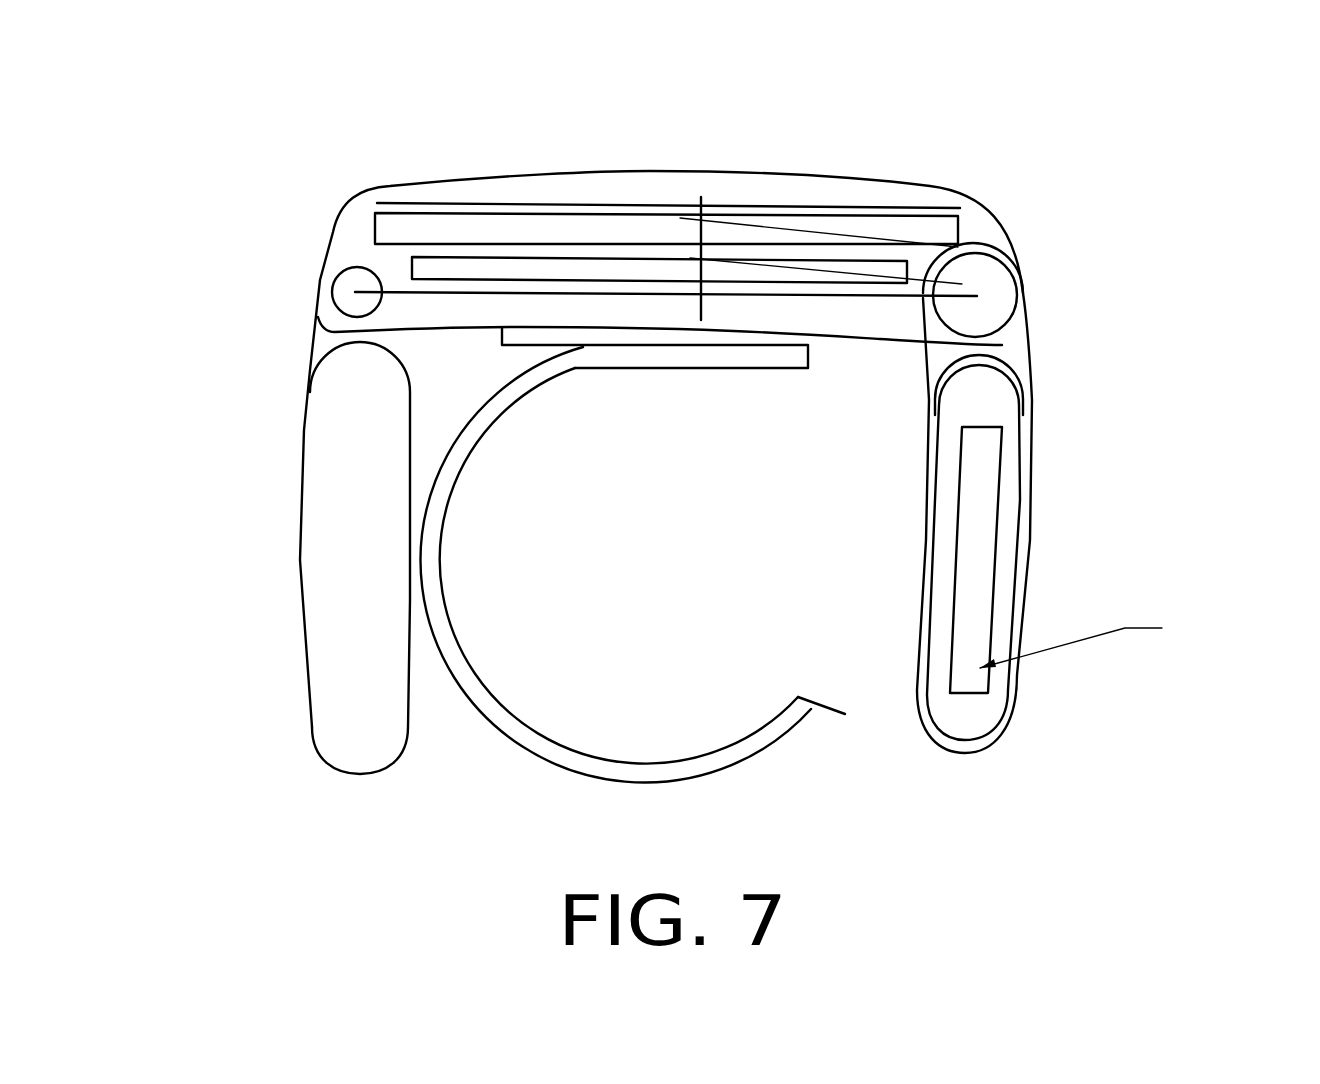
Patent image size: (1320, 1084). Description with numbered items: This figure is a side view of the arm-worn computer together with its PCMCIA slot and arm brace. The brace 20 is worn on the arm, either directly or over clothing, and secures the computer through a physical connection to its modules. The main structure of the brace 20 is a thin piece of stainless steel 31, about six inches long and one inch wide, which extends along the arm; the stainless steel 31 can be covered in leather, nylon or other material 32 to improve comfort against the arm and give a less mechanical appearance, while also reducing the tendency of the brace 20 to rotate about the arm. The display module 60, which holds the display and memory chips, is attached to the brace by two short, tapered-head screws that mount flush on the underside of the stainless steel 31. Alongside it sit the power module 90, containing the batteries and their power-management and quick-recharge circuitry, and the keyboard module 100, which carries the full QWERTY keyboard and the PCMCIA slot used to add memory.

The brace 20 is at (333, 287).
The stainless steel main structure 31 is at (715, 355).
The covering material 32 is at (653, 778).
The display module 60 is at (718, 192).
The power module 90 is at (326, 540).
The keyboard module 100 is at (993, 398).